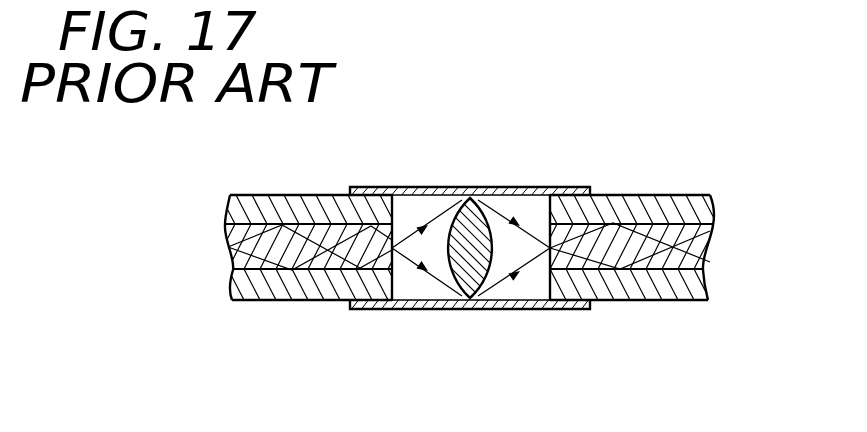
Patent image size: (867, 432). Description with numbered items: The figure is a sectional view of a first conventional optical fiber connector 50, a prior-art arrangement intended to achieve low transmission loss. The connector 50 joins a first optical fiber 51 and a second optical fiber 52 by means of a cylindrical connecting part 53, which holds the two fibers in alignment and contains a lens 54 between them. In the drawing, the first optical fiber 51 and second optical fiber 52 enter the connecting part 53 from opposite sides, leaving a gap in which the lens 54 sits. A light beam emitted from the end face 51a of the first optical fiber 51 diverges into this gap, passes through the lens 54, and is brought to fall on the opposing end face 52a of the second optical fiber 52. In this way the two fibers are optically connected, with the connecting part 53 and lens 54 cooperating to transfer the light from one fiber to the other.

The first conventional optical fiber connector 50 is at (537, 166).
The first optical fiber 51 is at (290, 242).
The end face of the first optical fiber 51a is at (390, 276).
The second optical fiber 52 is at (670, 236).
The end face of second optical fiber 52a is at (519, 304).
The cylindrical connecting part 53 is at (413, 190).
The lens 54 is at (466, 284).